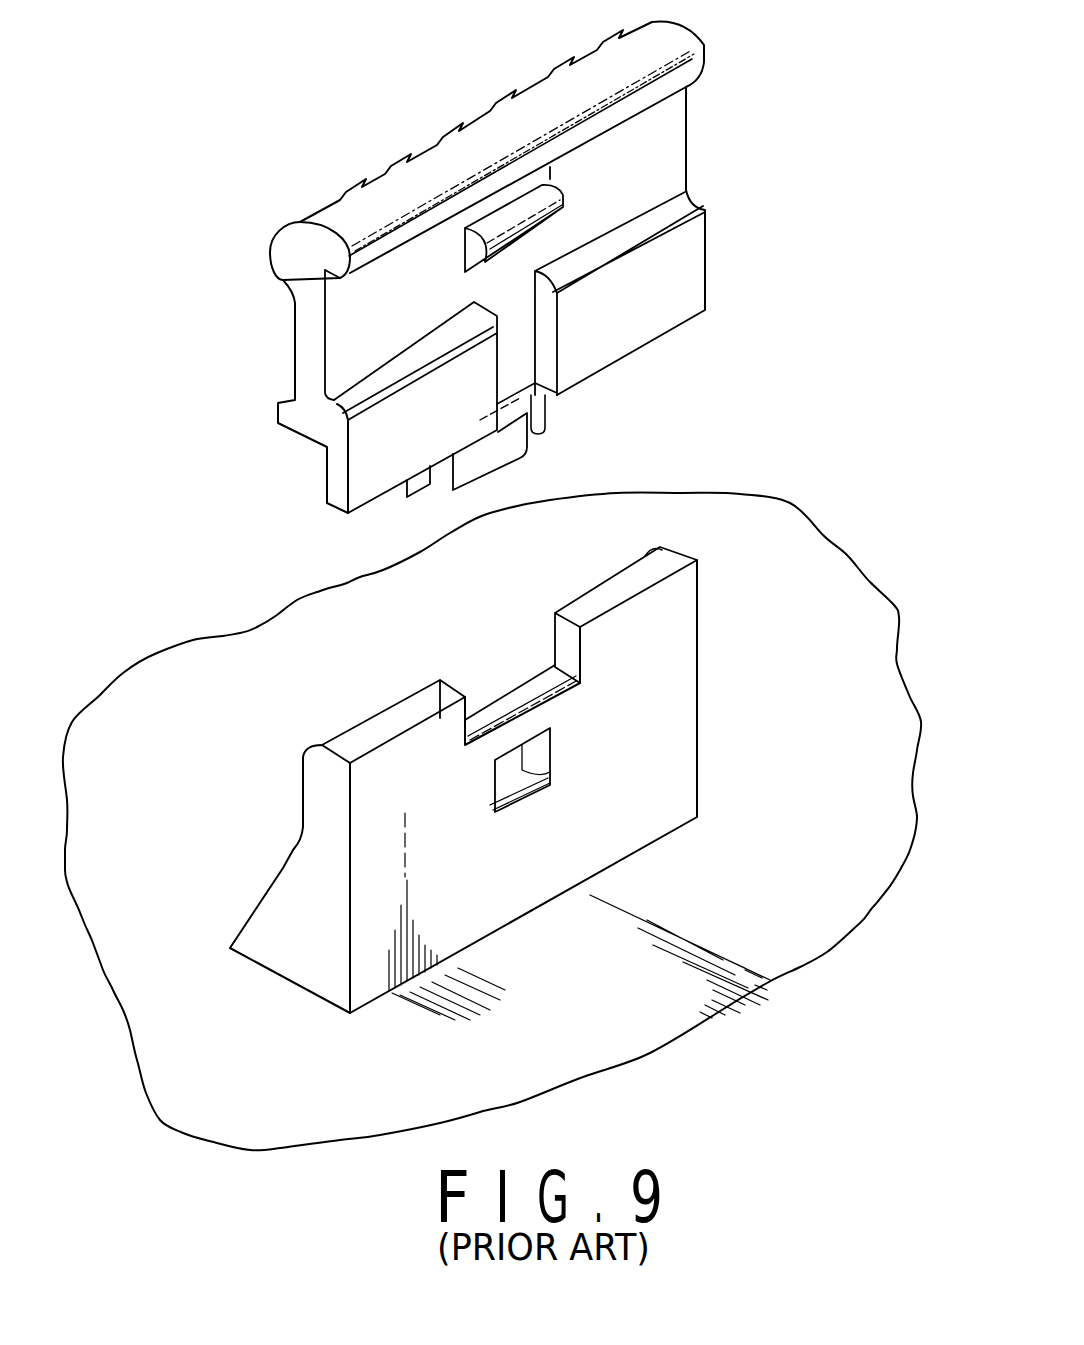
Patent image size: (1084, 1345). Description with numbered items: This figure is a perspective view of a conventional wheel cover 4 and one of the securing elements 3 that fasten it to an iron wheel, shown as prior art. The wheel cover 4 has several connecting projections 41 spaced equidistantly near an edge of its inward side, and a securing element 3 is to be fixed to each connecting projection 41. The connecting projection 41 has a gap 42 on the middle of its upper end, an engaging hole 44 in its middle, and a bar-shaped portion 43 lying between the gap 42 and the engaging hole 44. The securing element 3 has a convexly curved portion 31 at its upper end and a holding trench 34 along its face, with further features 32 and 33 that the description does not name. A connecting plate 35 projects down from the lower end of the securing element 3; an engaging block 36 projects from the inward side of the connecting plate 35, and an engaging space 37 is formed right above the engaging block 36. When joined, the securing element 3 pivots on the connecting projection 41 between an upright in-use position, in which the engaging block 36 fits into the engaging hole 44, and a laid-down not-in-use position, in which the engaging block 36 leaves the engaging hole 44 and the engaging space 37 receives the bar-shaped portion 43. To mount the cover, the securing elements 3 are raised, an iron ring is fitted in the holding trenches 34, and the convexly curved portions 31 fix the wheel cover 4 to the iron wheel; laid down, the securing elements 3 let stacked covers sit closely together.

The securing element 3 is at (715, 250).
The convexly curved portion 31 is at (290, 258).
The groove in rail head 32 is at (660, 68).
The boss on front face 33 is at (632, 195).
The holding trench 34 is at (550, 173).
The connecting plate 35 is at (413, 481).
The engaging block 36 is at (503, 460).
The engaging space 37 is at (535, 407).
The wheel cover 4 is at (833, 567).
The connecting projection 41 is at (678, 630).
The gap 42 is at (512, 643).
The bar-shaped portion 43 is at (497, 710).
The engaging hole 44 is at (513, 760).